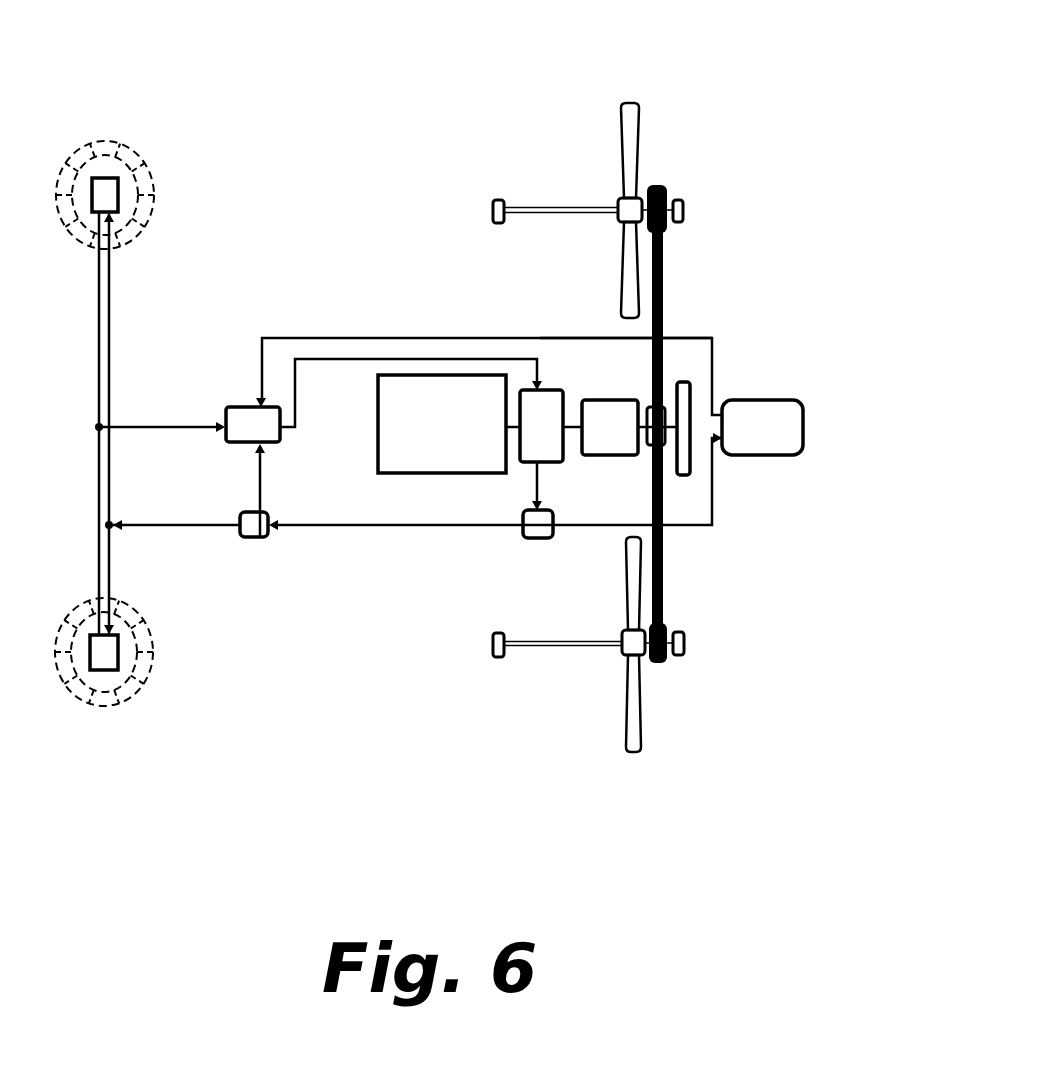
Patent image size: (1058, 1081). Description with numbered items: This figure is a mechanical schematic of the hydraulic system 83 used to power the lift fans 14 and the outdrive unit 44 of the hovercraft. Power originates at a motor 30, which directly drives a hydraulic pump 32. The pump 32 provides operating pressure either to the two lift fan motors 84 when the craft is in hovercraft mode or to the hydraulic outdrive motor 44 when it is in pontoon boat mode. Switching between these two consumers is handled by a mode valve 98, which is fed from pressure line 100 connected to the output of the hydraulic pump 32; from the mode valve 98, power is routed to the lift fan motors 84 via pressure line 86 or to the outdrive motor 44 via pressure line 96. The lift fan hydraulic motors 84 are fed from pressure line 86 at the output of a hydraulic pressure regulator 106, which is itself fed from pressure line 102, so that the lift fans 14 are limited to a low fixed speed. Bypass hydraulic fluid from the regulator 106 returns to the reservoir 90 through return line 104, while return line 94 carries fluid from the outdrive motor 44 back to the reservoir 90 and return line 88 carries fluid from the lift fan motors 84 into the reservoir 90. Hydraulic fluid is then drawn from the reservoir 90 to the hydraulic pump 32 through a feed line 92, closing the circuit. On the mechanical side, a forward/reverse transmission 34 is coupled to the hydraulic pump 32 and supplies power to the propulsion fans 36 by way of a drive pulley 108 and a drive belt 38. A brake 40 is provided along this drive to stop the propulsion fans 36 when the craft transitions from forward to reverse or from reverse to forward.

The lift fans 14 is at (73, 612).
The lift fan motors 84 is at (119, 188).
The pressure line 86 is at (185, 527).
The return line 88 is at (178, 425).
The reservoir 90 is at (243, 405).
The feed line 92 is at (313, 340).
The return line 94 is at (673, 338).
The pressure line 96 is at (692, 525).
The mode valve 98 is at (533, 465).
The pressure line 100 is at (520, 535).
The pressure line 102 is at (330, 527).
The return line 104 is at (262, 462).
The hydraulic pressure regulator 106 is at (255, 540).
The drive pulley 108 is at (647, 405).
The motor 30 is at (386, 375).
The hydraulic pump 32 is at (556, 388).
The forward/reverse transmission 34 is at (593, 400).
The propulsion fans 36 is at (640, 150).
The drive belt 38 is at (665, 275).
The brake 40 is at (683, 478).
The outdrive unit 44 is at (782, 400).
The hydraulic system 83 is at (408, 326).